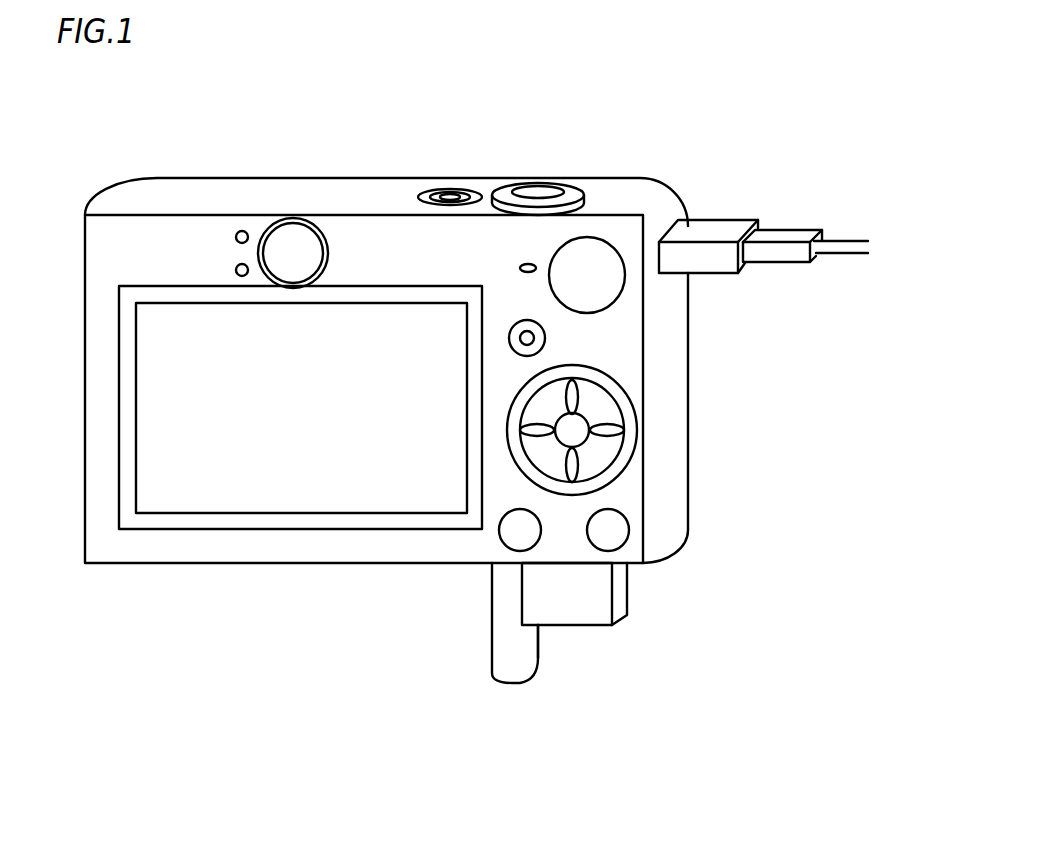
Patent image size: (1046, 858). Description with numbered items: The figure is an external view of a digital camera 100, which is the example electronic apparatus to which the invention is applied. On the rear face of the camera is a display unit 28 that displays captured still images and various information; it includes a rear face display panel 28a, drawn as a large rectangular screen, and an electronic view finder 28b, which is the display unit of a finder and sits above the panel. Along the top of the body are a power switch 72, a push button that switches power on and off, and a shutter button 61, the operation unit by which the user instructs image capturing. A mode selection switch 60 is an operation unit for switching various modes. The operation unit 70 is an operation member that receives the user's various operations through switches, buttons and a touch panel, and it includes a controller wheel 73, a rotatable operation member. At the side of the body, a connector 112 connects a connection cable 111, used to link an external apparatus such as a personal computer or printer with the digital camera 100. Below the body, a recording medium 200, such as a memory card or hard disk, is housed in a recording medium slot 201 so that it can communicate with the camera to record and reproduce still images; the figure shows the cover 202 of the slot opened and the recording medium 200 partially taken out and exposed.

The digital camera 100 is at (180, 602).
The display unit 28 is at (300, 308).
The rear face display panel 28a is at (210, 330).
The electronic view finder 28b is at (287, 260).
The power switch 72 is at (459, 194).
The shutter button 61 is at (552, 186).
The mode selection switch 60 is at (600, 256).
The controller wheel 73 is at (519, 390).
The operation unit 70 is at (540, 345).
The connector 112 is at (686, 216).
The connection cable 111 is at (782, 232).
The recording medium 200 is at (583, 602).
The recording medium slot 201 is at (537, 565).
The cover 202 is at (543, 662).